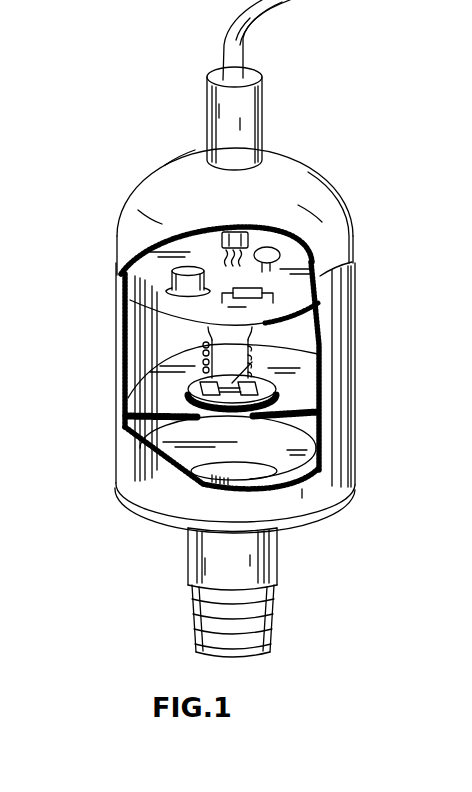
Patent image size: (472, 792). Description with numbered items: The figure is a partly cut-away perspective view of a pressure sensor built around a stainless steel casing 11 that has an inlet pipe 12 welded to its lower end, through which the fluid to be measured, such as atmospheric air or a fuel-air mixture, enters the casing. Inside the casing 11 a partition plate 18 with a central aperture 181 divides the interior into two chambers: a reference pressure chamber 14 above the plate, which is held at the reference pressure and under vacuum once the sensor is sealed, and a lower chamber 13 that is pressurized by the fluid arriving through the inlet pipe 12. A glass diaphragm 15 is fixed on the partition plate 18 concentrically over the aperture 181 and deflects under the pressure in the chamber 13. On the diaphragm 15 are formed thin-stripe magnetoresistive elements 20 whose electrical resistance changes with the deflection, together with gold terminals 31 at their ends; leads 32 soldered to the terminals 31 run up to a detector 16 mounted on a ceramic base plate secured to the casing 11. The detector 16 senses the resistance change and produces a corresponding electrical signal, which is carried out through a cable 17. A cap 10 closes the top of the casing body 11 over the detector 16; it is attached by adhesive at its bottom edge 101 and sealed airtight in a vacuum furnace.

The cap 10 is at (345, 212).
The cap bottom edge 101 is at (340, 266).
The casing 11 is at (326, 503).
The inlet pipe 12 is at (267, 558).
The chamber 13 is at (290, 460).
The reference pressure chamber 14 is at (160, 338).
The diaphragm 15 is at (262, 398).
The detector 16 is at (300, 256).
The cable 17 is at (244, 44).
The partition plate 18 is at (140, 395).
The aperture 181 is at (200, 422).
The magnetoresistive element 20 is at (252, 352).
The terminals 31 is at (259, 388).
The leads 32 is at (300, 326).